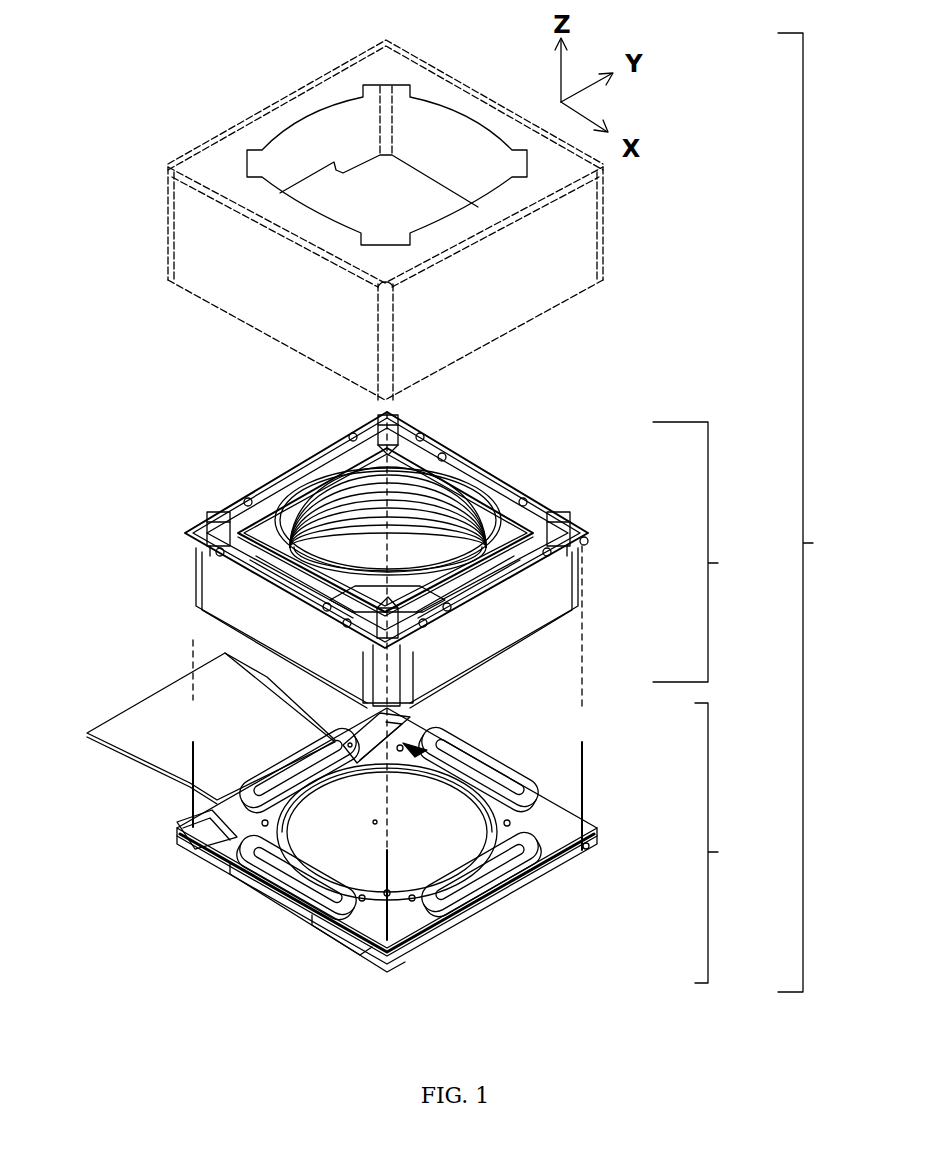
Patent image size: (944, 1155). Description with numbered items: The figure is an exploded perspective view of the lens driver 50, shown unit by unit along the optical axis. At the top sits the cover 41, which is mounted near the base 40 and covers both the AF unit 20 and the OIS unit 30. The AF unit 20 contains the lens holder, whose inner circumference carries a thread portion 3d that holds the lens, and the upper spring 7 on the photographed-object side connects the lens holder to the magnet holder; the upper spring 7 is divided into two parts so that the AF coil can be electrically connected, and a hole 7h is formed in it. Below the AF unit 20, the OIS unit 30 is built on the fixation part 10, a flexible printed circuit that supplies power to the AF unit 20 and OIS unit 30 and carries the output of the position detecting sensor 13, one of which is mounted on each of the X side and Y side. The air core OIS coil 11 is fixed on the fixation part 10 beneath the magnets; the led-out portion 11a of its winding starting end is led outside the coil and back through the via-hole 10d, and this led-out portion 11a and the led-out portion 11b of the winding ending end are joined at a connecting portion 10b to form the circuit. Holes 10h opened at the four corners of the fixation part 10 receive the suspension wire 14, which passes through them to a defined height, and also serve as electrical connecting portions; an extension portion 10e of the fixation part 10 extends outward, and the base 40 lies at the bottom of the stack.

The lens driver 50 is at (456, 521).
The cover 41 is at (552, 258).
The AF unit 20 is at (480, 628).
The upper spring 7 is at (433, 446).
The hole of frame 7h is at (584, 541).
The thread portion 3d is at (320, 500).
The OIS unit 30 is at (404, 826).
The fixation part 10 is at (423, 955).
The connecting portion 10b is at (400, 748).
The via-hole 10d is at (418, 752).
The extension portion 10e is at (163, 700).
The hole 10h is at (586, 846).
The OIS coil 11 is at (470, 912).
The led-out portion of winding starting terminal 11a is at (375, 822).
The led-out portion of winding ending terminal 11b is at (350, 745).
The position detecting sensor 13 is at (375, 740).
The suspension wire 14 is at (580, 783).
The base 40 is at (260, 917).